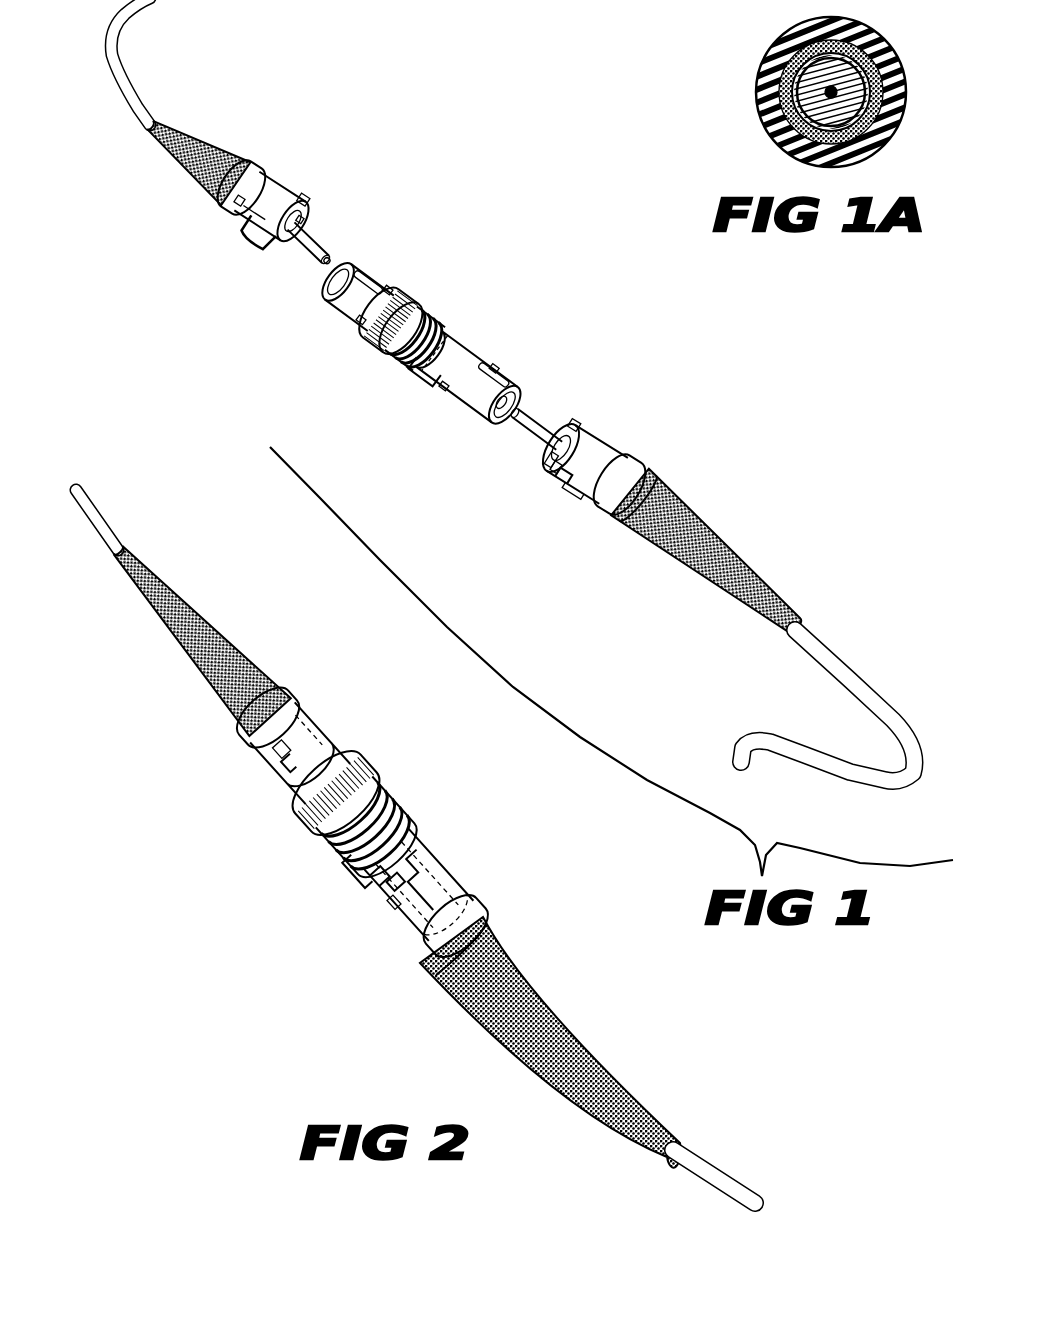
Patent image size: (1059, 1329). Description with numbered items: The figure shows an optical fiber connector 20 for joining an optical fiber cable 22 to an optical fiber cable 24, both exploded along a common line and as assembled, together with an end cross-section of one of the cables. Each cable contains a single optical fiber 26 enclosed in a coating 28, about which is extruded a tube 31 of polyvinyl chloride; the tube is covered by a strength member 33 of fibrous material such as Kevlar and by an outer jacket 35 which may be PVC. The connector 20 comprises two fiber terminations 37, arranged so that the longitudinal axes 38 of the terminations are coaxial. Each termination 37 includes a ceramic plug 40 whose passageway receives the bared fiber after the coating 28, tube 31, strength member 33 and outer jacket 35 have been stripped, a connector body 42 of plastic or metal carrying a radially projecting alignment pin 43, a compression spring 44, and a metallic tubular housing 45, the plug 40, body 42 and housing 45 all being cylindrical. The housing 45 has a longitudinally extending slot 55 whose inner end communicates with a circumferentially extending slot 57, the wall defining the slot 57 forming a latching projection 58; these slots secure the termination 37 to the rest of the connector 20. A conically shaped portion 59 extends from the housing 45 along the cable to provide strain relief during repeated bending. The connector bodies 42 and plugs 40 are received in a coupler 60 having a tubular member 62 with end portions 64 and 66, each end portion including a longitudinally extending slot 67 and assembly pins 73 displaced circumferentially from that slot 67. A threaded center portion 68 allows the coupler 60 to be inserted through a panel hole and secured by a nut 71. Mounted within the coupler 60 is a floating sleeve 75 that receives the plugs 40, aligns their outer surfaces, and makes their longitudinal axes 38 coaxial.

In FIG. 1, the optical fiber connector 20 is at (432, 128).
In FIG. 2, the optical fiber connector 20 is at (393, 755).
In FIG. 1, the optical fiber cable 22 is at (120, 88).
In FIG. 2, the optical fiber cable 22 is at (100, 512).
In FIG. 1, the optical fiber cable 24 is at (815, 640).
In FIG. 2, the optical fiber cable 24 is at (706, 1170).
In FIG. 1A, the optical fiber 26 is at (852, 57).
In FIG. 1A, the coating 28 is at (881, 90).
In FIG. 1A, the tube 31 is at (767, 125).
In FIG. 1A, the strength member 33 is at (868, 130).
In FIG. 1A, the outer jacket 35 is at (770, 67).
In FIG. 1, the fiber termination 37 is at (420, 338).
In FIG. 2, the fiber termination 37 is at (382, 822).
In FIG. 1, the longitudinal axis 38 is at (338, 270).
In FIG. 1, the plug 40 is at (428, 335).
In FIG. 1, the connector body 42 is at (283, 246).
In FIG. 1, the alignment pin 43 is at (301, 231).
In FIG. 1, the compression spring 44 is at (292, 214).
In FIG. 1, the tubular housing 45 is at (258, 236).
In FIG. 2, the tubular housing 45 is at (258, 752).
In FIG. 1, the longitudinally extending slot 55 is at (253, 222).
In FIG. 1, the circumferentially extending slot 57 is at (263, 206).
In FIG. 2, the circumferentially extending slot 57 is at (280, 775).
In FIG. 1, the latching projection 58 is at (242, 202).
In FIG. 2, the latching projection 58 is at (395, 885).
In FIG. 1, the strain relief portion 59 is at (196, 150).
In FIG. 2, the strain relief portion 59 is at (160, 580).
In FIG. 1, the coupler 60 is at (430, 334).
In FIG. 2, the coupler 60 is at (379, 841).
In FIG. 1, the tubular member 62 is at (465, 348).
In FIG. 2, the tubular member 62 is at (408, 848).
In FIG. 1, the end portion 64 is at (348, 312).
In FIG. 1, the end portion 66 is at (455, 395).
In FIG. 1, the longitudinally extending slot 67 is at (362, 282).
In FIG. 1, the center portion 68 is at (408, 368).
In FIG. 2, the center portion 68 is at (335, 862).
In FIG. 1, the nut 71 is at (410, 298).
In FIG. 1, the assembly pin 73 is at (392, 292).
In FIG. 2, the assembly pin 73 is at (273, 762).
In FIG. 1, the sleeve 75 is at (430, 360).